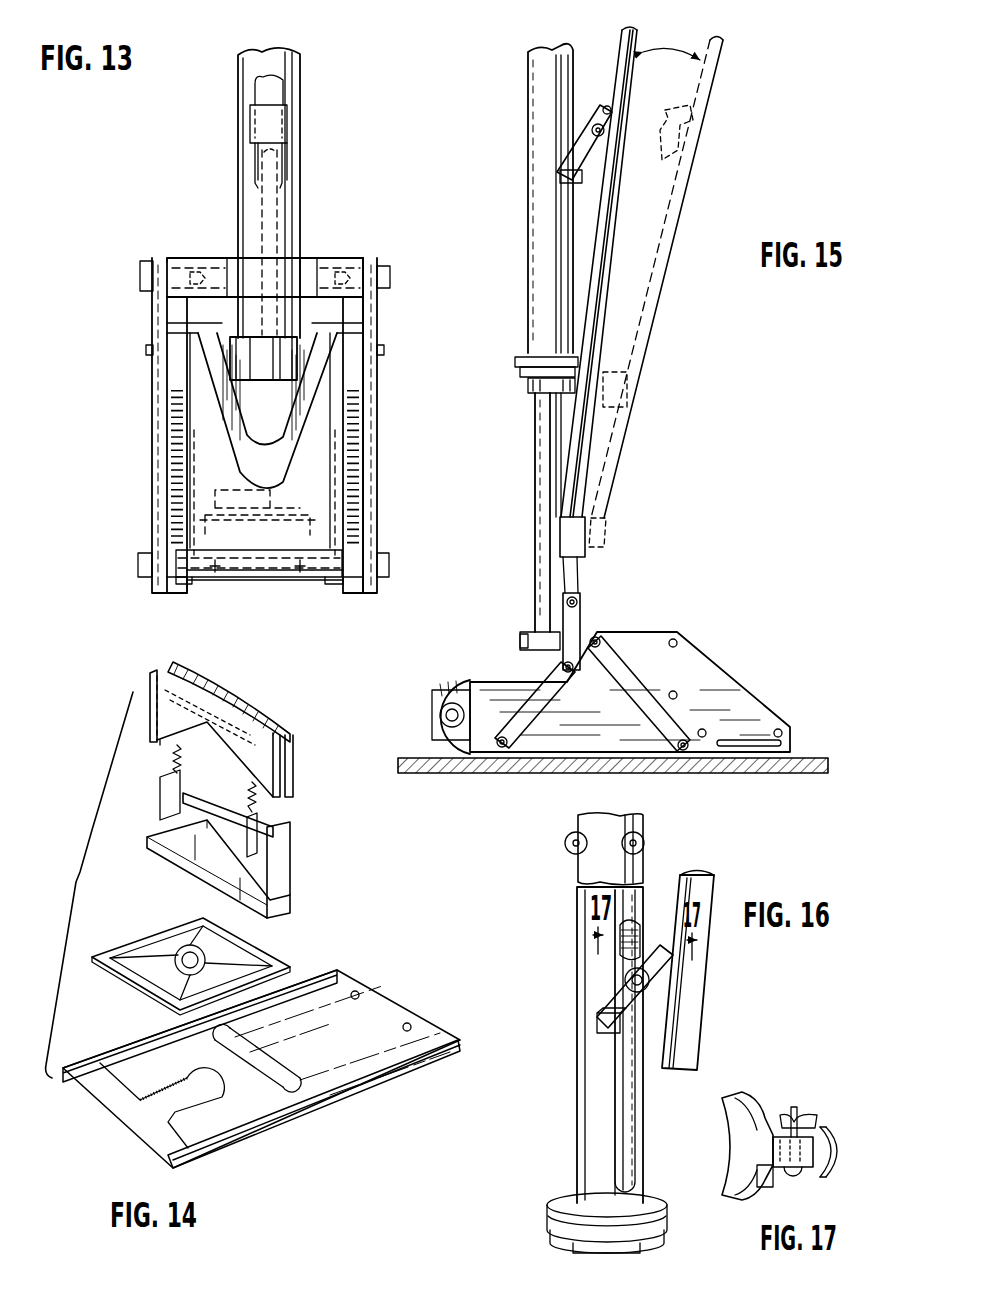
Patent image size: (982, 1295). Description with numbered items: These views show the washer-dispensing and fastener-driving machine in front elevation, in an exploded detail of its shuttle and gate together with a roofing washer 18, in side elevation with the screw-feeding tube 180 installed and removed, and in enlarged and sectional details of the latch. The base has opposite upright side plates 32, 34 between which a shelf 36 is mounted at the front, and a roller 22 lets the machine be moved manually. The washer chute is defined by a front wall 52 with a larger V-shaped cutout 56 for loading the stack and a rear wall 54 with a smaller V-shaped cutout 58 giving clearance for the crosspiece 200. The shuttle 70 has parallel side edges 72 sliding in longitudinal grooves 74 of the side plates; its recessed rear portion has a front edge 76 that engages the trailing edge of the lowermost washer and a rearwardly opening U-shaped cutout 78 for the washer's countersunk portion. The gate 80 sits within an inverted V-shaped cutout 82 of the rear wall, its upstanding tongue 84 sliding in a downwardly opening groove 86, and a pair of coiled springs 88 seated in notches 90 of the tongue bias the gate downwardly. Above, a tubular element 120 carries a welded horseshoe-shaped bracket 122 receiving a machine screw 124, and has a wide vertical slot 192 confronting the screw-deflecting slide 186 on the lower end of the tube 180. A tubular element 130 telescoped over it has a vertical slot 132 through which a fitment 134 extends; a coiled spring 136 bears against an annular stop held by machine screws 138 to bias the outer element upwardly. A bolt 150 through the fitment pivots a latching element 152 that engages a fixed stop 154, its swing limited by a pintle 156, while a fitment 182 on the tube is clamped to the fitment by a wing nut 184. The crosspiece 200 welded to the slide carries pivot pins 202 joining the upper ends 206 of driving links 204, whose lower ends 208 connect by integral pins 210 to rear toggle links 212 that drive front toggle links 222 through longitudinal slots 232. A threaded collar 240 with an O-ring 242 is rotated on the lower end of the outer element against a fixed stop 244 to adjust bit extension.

In FIG. 14, the roofing washer 18 is at (258, 938).
In FIG. 15, the roller 22 is at (432, 682).
In FIG. 13, the side plate 32 is at (177, 392).
In FIG. 13, the side plate 34 is at (364, 472).
In FIG. 15, the side plate 34 is at (650, 640).
In FIG. 13, the shelf 36 is at (205, 537).
In FIG. 13, the front wall 52 is at (340, 330).
In FIG. 13, the rear wall 54 is at (320, 333).
In FIG. 14, the rear wall 54 is at (291, 748).
In FIG. 13, the V-shaped cutout 56 is at (270, 470).
In FIG. 13, the V-shaped cutout 58 is at (275, 426).
In FIG. 13, the shuttle 70 is at (270, 585).
In FIG. 14, the shuttle 70 is at (336, 978).
In FIG. 14, the side edge 72 is at (322, 972).
In FIG. 13, the longitudinal groove 74 is at (180, 586).
In FIG. 14, the front edge 76 is at (270, 1078).
In FIG. 14, the U-shaped cutout 78 is at (150, 1110).
In FIG. 14, the gate 80 is at (190, 852).
In FIG. 14, the inverted V-shaped cutout 82 is at (258, 804).
In FIG. 14, the tongue 84 is at (276, 862).
In FIG. 14, the groove 86 is at (268, 716).
In FIG. 14, the coiled spring 88 is at (175, 753).
In FIG. 14, the notch 90 is at (258, 822).
In FIG. 13, the tubular element 120 is at (296, 173).
In FIG. 15, the tubular element 120 is at (535, 456).
In FIG. 13, the horseshoe-shaped bracket 122 is at (217, 333).
In FIG. 15, the horseshoe-shaped bracket 122 is at (540, 648).
In FIG. 15, the machine screw 124 is at (520, 638).
In FIG. 15, the tubular element 130 is at (540, 252).
In FIG. 16, the tubular element 130 is at (590, 1058).
In FIG. 16, the vertical slot 132 is at (618, 1127).
In FIG. 15, the fitment 134 is at (588, 165).
In FIG. 16, the fitment 134 is at (620, 958).
In FIG. 17, the fitment 134 is at (740, 1100).
In FIG. 16, the coiled spring 136 is at (640, 918).
In FIG. 16, the machine screw 138 is at (622, 848).
In FIG. 17, the bolt 150 is at (798, 1115).
In FIG. 15, the latching element 152 is at (565, 152).
In FIG. 16, the latching element 152 is at (622, 994).
In FIG. 17, the latching element 152 is at (786, 1190).
In FIG. 15, the fixed stop 154 is at (560, 178).
In FIG. 16, the fixed stop 154 is at (597, 1022).
In FIG. 17, the fixed stop 154 is at (760, 1187).
In FIG. 15, the pintle 156 is at (607, 106).
In FIG. 16, the pintle 156 is at (650, 940).
In FIG. 15, the screw-feeding tube 180 is at (700, 176).
In FIG. 16, the screw-feeding tube 180 is at (700, 975).
In FIG. 15, the fitment 182 is at (700, 128).
In FIG. 16, the fitment 182 is at (650, 1003).
In FIG. 17, the fitment 182 is at (828, 1152).
In FIG. 17, the wing nut 184 is at (793, 1110).
In FIG. 13, the screw-deflecting slide 186 is at (290, 127).
In FIG. 15, the screw-deflecting slide 186 is at (586, 530).
In FIG. 13, the vertical slot 192 is at (270, 217).
In FIG. 13, the crosspiece 200 is at (218, 262).
In FIG. 13, the pivot pin 202 is at (141, 268).
In FIG. 13, the driving link 204 is at (158, 305).
In FIG. 15, the driving link 204 is at (583, 615).
In FIG. 13, the upper end 206 is at (166, 258).
In FIG. 13, the lower end 208 is at (172, 590).
In FIG. 13, the integral pin 210 is at (146, 349).
In FIG. 15, the rear toggle link 212 is at (490, 776).
In FIG. 15, the front toggle link 222 is at (660, 668).
In FIG. 15, the longitudinal slot 232 is at (722, 740).
In FIG. 15, the threaded collar 240 is at (528, 382).
In FIG. 16, the threaded collar 240 is at (552, 1232).
In FIG. 15, the O-ring 242 is at (520, 360).
In FIG. 16, the O-ring 242 is at (547, 1200).
In FIG. 15, the fixed stop 244 is at (578, 387).